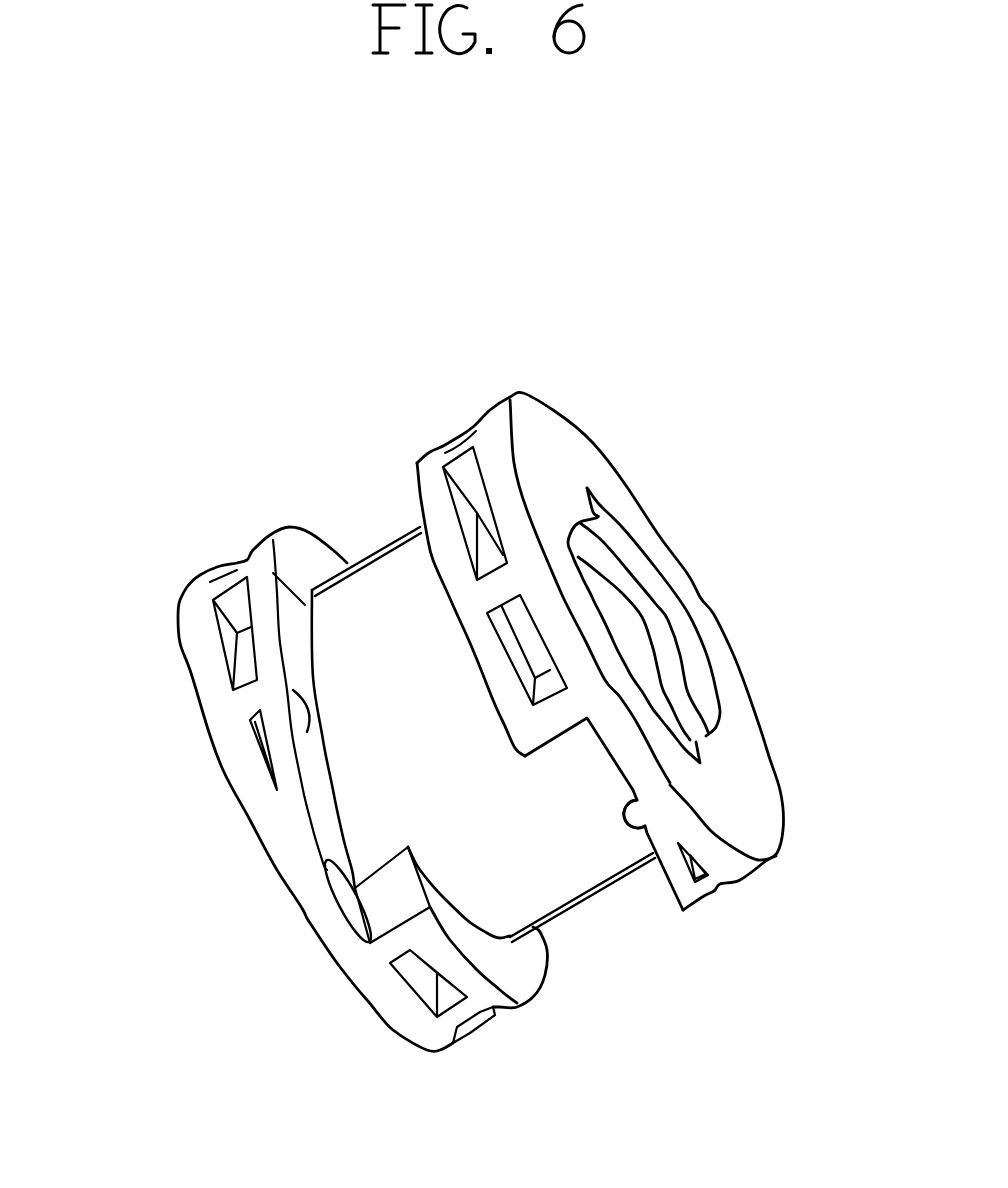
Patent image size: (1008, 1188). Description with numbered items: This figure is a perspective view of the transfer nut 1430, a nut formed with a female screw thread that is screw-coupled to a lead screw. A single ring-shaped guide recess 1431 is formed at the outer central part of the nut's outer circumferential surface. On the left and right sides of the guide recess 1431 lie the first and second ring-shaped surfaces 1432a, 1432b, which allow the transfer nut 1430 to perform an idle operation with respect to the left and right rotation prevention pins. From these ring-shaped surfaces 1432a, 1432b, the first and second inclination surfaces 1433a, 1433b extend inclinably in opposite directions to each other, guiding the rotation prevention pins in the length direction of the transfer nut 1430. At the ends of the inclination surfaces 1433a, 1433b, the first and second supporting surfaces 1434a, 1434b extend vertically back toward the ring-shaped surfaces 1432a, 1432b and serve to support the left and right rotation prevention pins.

The transfer nut 1430 is at (112, 333).
The ring-shaped guide recess 1431 is at (592, 916).
The first ring-shaped surface 1432a is at (619, 643).
The second ring-shaped surface 1432b is at (367, 807).
The first inclination surface 1433a is at (640, 786).
The second inclination surface 1433b is at (300, 690).
The first supporting surface 1434a is at (597, 742).
The second supporting surface 1434b is at (400, 903).